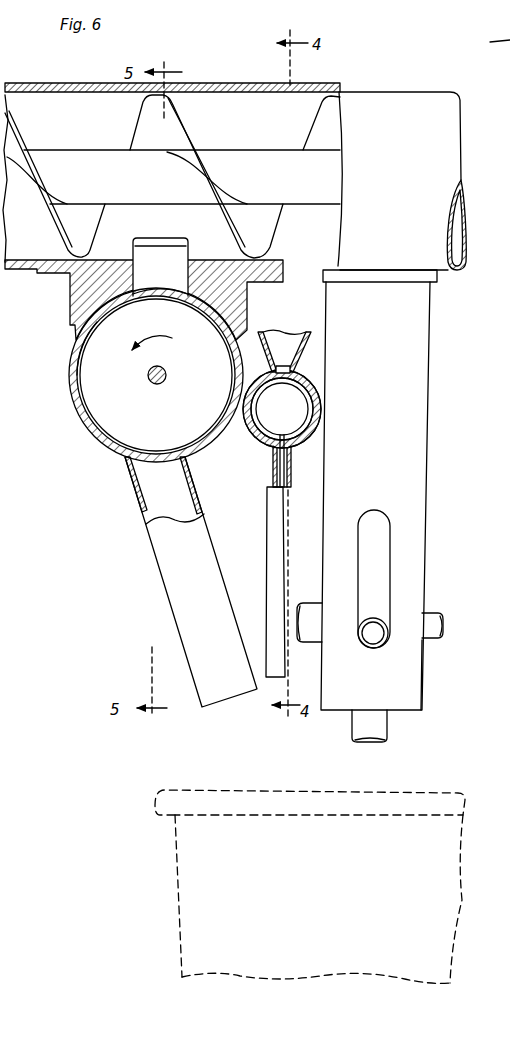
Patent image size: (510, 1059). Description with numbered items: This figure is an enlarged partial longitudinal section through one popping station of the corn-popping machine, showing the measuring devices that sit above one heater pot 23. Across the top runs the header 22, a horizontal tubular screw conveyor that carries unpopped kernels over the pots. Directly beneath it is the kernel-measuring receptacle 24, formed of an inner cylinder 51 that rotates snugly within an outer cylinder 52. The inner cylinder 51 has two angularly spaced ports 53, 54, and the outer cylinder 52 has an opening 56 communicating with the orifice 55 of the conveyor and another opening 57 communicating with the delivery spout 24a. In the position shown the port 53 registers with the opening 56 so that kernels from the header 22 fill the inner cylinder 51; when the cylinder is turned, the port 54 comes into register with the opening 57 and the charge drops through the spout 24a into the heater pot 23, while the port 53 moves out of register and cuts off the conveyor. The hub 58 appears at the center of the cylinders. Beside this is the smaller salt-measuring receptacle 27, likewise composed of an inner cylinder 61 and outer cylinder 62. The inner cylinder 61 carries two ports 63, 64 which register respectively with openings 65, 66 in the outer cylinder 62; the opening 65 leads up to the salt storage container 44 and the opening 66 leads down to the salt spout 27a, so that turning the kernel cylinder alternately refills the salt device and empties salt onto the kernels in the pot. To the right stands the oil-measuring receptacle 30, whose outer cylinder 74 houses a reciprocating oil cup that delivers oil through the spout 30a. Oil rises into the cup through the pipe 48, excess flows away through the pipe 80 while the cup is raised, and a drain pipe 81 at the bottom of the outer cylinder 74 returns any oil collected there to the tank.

The header 22 is at (193, 138).
The heater pot 23 is at (437, 872).
The kernel-measuring receptacle 24 is at (88, 428).
The spout 24a is at (170, 575).
The salt-measuring receptacle 27 is at (314, 378).
The spout 27a is at (270, 545).
The oil-measuring receptacle 30 is at (431, 461).
The spout 30a is at (378, 557).
The salt storage container 44 is at (306, 332).
The pipe 48 is at (310, 605).
The inner cylinder 51 is at (220, 430).
The outer cylinder 52 is at (77, 412).
The port 53 is at (143, 297).
The port 54 is at (82, 362).
The orifice 55 is at (142, 241).
The opening 56 is at (173, 290).
The opening 57 is at (163, 467).
The hub 58 is at (156, 384).
The inner cylinder 61 is at (312, 420).
The outer cylinder 62 is at (318, 397).
The port 63 is at (282, 409).
The port 64 is at (297, 416).
The opening 65 is at (281, 368).
The opening 66 is at (271, 452).
The outer cylinder 74 is at (423, 668).
The pipe 80 is at (437, 614).
The drain pipe 81 is at (383, 728).